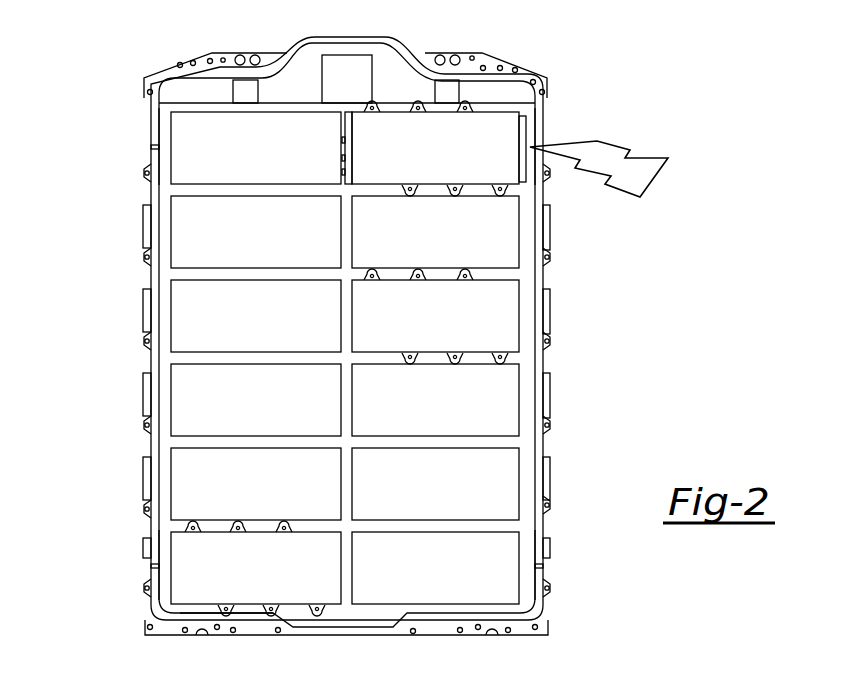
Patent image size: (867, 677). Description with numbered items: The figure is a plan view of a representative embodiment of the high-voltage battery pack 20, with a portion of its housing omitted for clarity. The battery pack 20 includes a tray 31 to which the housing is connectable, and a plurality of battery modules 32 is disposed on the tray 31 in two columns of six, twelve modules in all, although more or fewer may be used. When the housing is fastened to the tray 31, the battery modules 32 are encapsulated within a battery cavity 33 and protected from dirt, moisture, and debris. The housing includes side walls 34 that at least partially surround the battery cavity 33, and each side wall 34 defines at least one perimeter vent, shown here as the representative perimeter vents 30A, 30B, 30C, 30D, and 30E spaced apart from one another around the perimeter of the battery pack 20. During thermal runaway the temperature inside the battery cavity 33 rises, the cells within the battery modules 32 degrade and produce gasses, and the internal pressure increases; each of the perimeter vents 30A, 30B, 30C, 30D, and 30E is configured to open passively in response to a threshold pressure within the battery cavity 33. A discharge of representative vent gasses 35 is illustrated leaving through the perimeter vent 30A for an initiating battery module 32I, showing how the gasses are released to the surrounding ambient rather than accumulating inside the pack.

The battery pack 20 is at (399, 346).
The tray 31 is at (150, 190).
The battery modules 32 is at (247, 166).
The initiating battery module 32I is at (421, 161).
The battery cavity 33 is at (533, 120).
The side walls 34 is at (500, 67).
The vent gasses 35 is at (657, 175).
The perimeter vent 30A is at (530, 147).
The perimeter vent 30B is at (157, 147).
The perimeter vent 30C is at (543, 566).
The perimeter vent 30D is at (151, 566).
The perimeter vent 30E is at (345, 633).